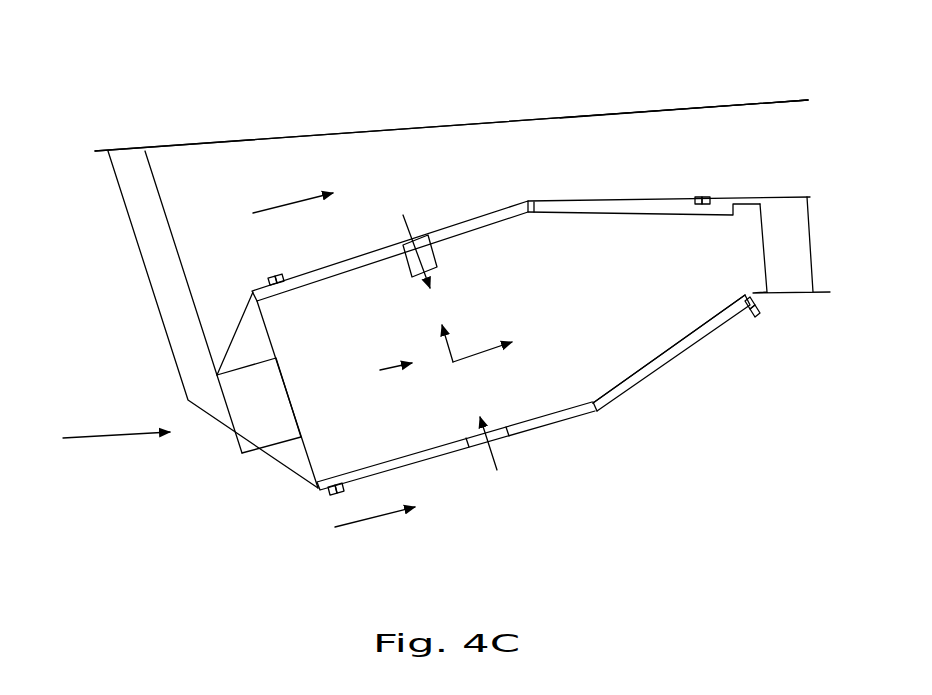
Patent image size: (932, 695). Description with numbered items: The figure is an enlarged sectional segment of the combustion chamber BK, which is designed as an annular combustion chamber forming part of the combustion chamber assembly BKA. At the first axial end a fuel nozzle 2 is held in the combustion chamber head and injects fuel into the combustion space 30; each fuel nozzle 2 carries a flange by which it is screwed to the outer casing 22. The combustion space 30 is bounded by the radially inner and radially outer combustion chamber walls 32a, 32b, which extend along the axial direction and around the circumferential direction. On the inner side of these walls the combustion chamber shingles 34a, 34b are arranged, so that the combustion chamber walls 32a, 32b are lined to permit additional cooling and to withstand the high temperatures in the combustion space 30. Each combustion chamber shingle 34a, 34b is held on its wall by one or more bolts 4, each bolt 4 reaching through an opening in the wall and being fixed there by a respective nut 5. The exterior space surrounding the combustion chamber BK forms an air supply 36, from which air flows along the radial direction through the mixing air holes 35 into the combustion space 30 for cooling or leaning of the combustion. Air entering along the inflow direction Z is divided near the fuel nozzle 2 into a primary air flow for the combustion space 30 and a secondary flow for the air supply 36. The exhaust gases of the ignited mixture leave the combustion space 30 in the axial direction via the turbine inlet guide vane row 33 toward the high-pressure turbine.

The fuel nozzle 2 is at (245, 420).
The bolt 4 is at (699, 196).
The nut 5 is at (706, 196).
The outer casing 22 is at (540, 118).
The combustion space 30 is at (554, 330).
The radially inner combustion chamber wall 32a is at (567, 423).
The radially outer combustion chamber wall 32b is at (255, 292).
The turbine inlet guide vane row 33 is at (792, 248).
The combustion chamber shingle 34a is at (662, 360).
The combustion chamber shingle 34b is at (500, 217).
The mixing air hole 35 is at (403, 236).
The air supply 36 is at (623, 148).
The combustion chamber assembly BKA is at (165, 128).
The combustion chamber BK is at (603, 465).
The inflow direction Z is at (103, 433).